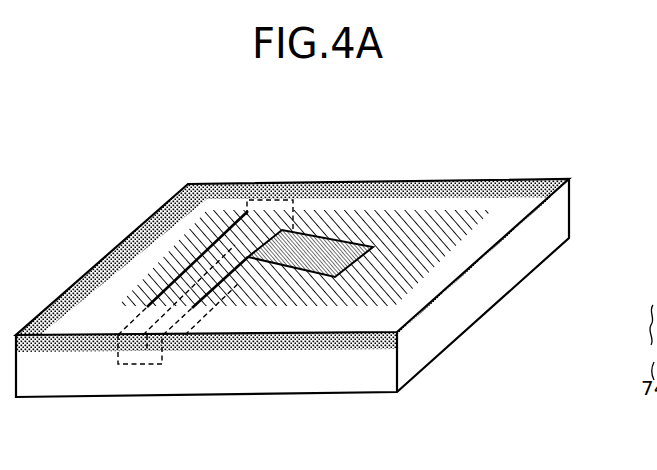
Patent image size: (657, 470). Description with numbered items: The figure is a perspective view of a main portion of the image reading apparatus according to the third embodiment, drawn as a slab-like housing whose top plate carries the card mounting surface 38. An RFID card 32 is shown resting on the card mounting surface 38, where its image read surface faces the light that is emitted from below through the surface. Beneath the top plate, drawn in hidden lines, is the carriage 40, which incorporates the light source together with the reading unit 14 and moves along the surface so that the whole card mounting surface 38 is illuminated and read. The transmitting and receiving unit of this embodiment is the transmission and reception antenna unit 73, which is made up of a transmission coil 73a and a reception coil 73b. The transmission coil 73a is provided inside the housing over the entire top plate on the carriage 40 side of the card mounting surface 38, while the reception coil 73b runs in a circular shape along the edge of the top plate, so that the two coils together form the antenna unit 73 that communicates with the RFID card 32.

The reading unit 14 is at (139, 367).
The RFID card 32 is at (322, 234).
The card mounting surface 38 is at (413, 222).
The carriage 40 is at (168, 358).
The transmission and reception antenna unit 73 is at (503, 132).
The transmission coil 73a is at (508, 207).
The reception coil 73b is at (560, 202).